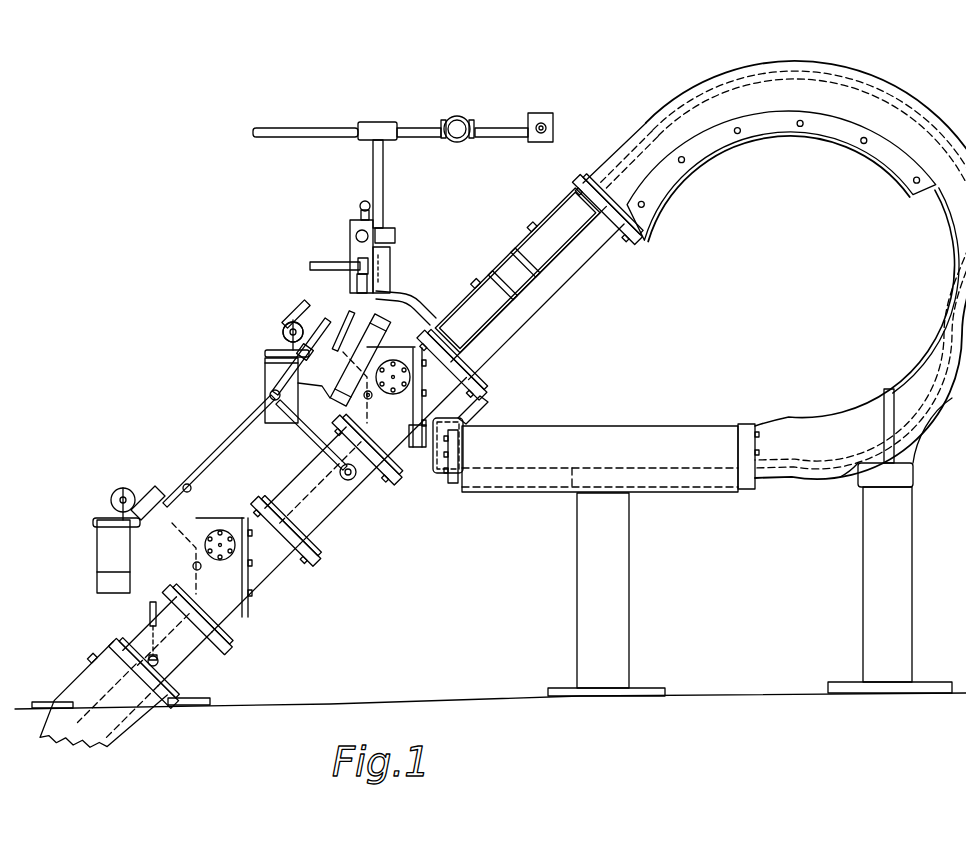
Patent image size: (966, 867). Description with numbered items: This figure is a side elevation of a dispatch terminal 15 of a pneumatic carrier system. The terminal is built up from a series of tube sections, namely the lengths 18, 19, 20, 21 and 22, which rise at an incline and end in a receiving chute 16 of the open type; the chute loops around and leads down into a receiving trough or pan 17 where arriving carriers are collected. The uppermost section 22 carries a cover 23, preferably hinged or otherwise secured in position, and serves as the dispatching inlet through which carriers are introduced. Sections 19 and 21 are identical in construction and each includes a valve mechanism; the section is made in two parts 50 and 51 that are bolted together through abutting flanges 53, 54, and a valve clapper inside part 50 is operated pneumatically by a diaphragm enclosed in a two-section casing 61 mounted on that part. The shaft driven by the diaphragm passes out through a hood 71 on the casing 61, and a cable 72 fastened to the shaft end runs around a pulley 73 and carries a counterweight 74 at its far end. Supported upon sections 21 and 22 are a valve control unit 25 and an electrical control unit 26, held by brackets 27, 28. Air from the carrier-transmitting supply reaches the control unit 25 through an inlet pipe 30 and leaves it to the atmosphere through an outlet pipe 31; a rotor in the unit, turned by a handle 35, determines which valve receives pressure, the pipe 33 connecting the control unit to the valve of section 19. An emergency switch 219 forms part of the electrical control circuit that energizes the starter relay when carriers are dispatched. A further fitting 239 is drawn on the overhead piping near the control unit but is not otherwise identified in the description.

The dispatch terminal 15 is at (268, 287).
The receiving chute 16 is at (950, 276).
The receiving trough 17 is at (480, 500).
The tube section 18 is at (185, 672).
The tube section 19 is at (250, 620).
The tube section 20 is at (352, 512).
The tube section 21 is at (442, 413).
The tube section 22 is at (562, 284).
The cover 23 is at (512, 270).
The valve control unit 25 is at (350, 240).
The electrical control unit 26 is at (392, 270).
The bracket 27 is at (355, 284).
The bracket 28 is at (405, 300).
The pipe 30 is at (320, 262).
The pipe 31 is at (362, 205).
The pipe 33 is at (226, 443).
The handle 35 is at (396, 235).
The part 50 is at (416, 408).
The part 51 is at (425, 392).
The flange 53 is at (409, 430).
The flange 54 is at (460, 400).
The casing 61 is at (338, 378).
The hood 71 is at (328, 318).
The cable 72 is at (266, 352).
The pulley 73 is at (291, 322).
The counterweight 74 is at (265, 380).
The emergency switch 219 is at (555, 128).
The collar 239 is at (462, 107).